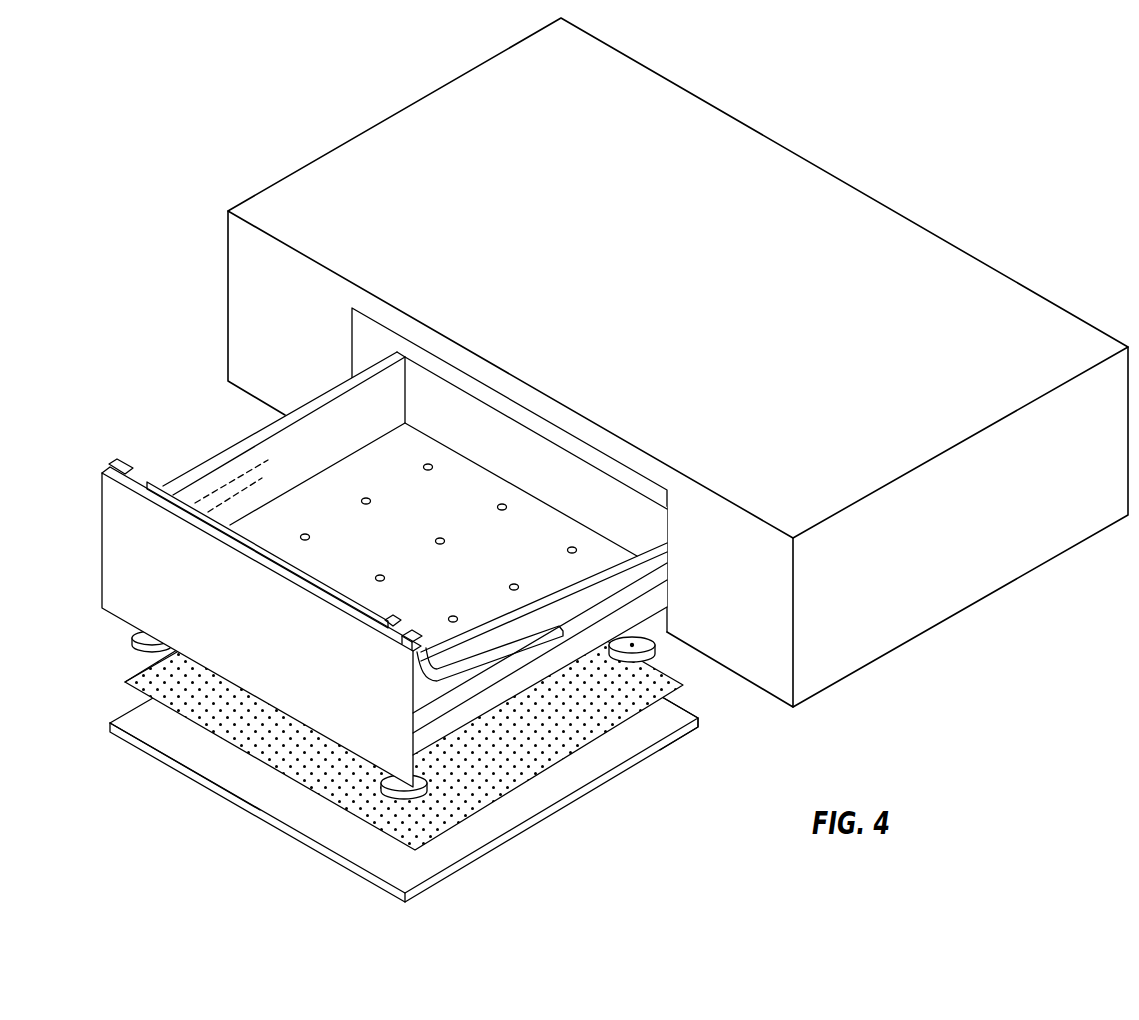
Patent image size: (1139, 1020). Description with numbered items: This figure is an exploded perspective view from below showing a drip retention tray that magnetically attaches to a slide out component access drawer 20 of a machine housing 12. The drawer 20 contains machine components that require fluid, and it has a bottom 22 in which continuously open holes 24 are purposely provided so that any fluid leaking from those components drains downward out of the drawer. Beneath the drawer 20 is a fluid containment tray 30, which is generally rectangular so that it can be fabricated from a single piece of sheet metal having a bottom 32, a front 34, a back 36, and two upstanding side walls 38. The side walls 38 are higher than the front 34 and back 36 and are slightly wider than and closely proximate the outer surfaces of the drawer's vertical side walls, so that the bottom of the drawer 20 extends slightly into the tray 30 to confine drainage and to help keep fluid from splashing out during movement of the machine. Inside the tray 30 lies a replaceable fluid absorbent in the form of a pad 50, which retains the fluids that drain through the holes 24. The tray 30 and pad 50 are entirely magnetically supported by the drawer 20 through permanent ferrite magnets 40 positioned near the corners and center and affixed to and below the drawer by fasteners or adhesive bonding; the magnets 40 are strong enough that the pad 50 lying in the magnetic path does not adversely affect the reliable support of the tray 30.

The housing 12 is at (698, 298).
The drawer 20 is at (117, 552).
The bottom 22 is at (655, 625).
The holes 24 is at (442, 537).
The fluid containment tray 30 is at (250, 804).
The bottom 32 is at (343, 868).
The front 34 is at (178, 766).
The back 36 is at (697, 708).
The side walls 38 is at (127, 712).
The permanent ferrite magnets 40 is at (140, 636).
The pad 50 is at (143, 668).